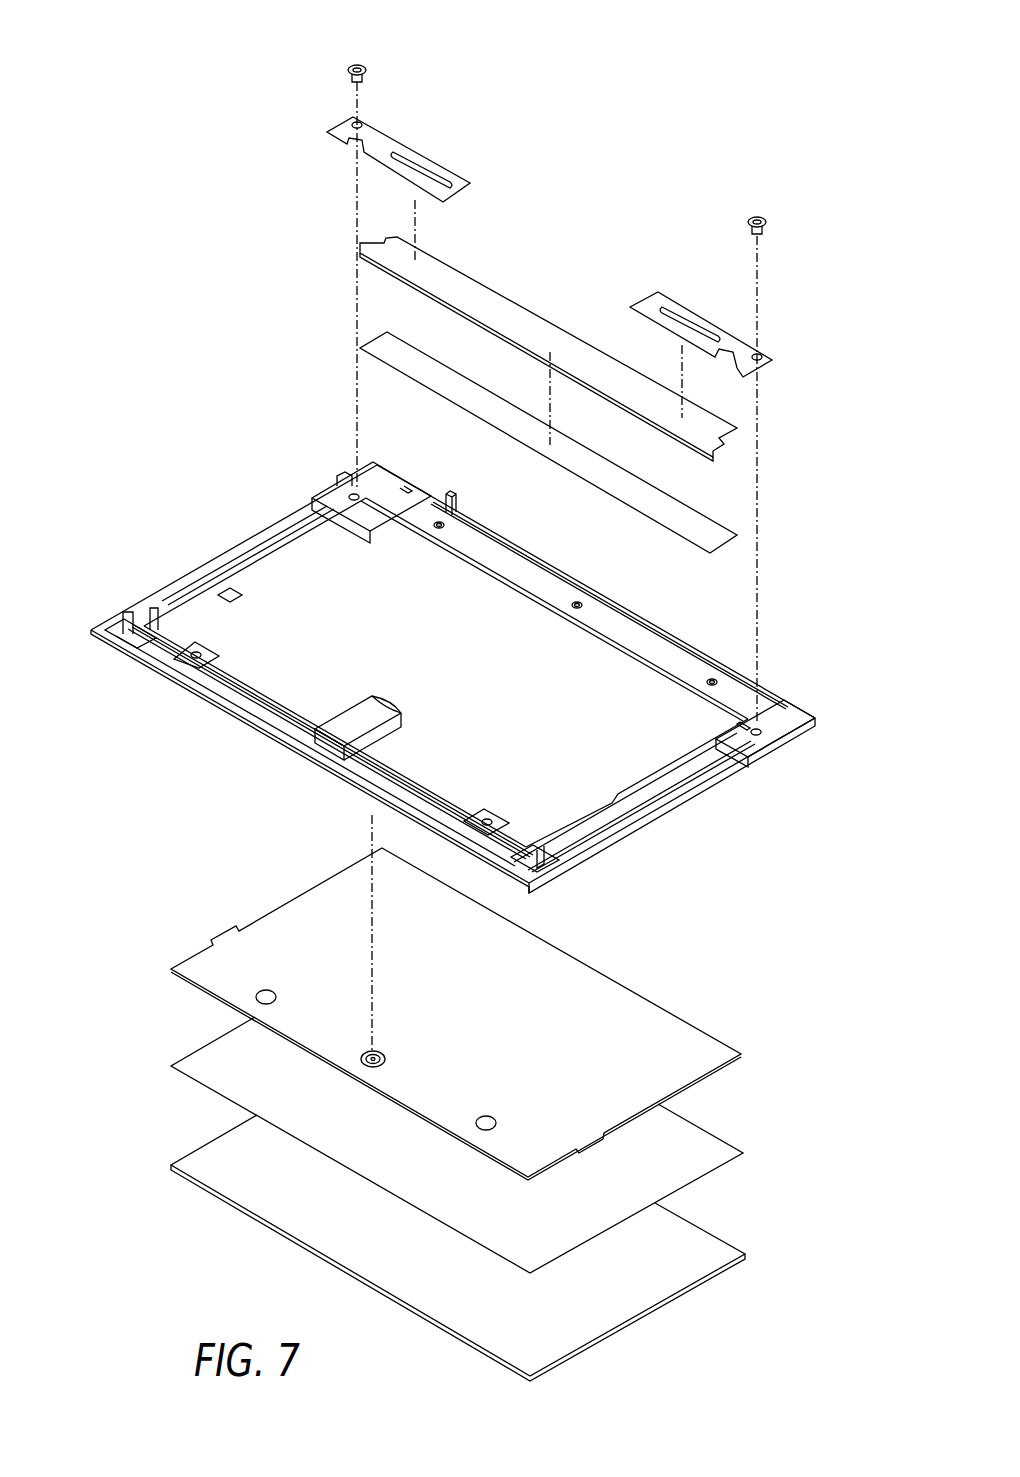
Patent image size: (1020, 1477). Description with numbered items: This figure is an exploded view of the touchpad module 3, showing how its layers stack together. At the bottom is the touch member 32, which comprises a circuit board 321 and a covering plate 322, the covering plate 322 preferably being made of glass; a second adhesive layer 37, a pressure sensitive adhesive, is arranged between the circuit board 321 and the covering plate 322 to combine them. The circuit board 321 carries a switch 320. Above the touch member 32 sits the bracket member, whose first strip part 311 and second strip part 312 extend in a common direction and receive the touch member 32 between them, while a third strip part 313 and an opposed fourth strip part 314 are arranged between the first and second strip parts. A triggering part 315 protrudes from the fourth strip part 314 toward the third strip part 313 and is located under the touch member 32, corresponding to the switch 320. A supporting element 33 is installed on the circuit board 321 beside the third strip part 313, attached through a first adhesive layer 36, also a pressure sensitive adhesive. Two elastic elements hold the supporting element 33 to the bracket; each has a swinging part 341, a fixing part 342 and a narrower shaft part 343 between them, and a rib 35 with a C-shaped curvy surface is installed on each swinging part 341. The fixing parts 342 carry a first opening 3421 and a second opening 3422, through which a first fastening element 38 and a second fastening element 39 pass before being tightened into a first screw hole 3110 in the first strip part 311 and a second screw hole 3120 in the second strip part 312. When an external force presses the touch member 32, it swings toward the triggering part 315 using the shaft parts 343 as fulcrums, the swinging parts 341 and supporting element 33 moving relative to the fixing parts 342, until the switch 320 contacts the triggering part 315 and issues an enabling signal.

The touchpad module 3 is at (853, 85).
The first strip part 311 is at (222, 574).
The second strip part 312 is at (645, 810).
The third strip part 313 is at (527, 565).
The fourth strip part 314 is at (278, 718).
The triggering part 315 is at (375, 705).
The first screw hole 3110 is at (352, 492).
The second screw hole 3120 is at (764, 726).
The touch member 32 is at (821, 1040).
The switch 320 is at (378, 1054).
The circuit board 321 is at (732, 1050).
The covering plate 322 is at (732, 1250).
The supporting element 33 is at (520, 315).
The swinging part 341 is at (470, 181).
The fixing part 342 is at (338, 133).
The shaft part 343 is at (377, 134).
The first opening 3421 is at (350, 118).
The second opening 3422 is at (762, 351).
The rib 35 is at (441, 158).
The first adhesive layer 36 is at (685, 520).
The second adhesive layer 37 is at (192, 1068).
The first fastening element 38 is at (360, 64).
The second fastening element 39 is at (757, 214).